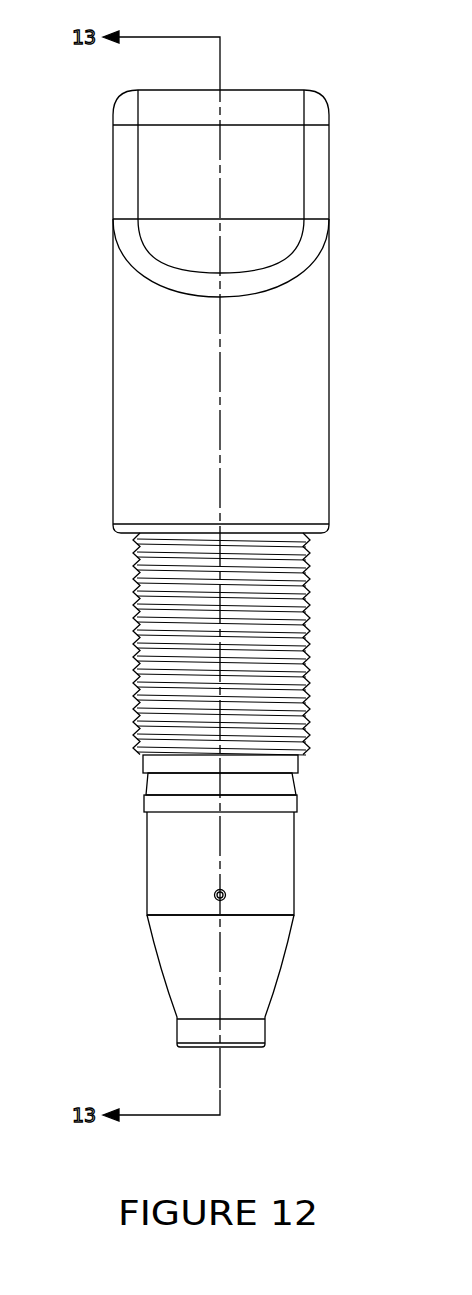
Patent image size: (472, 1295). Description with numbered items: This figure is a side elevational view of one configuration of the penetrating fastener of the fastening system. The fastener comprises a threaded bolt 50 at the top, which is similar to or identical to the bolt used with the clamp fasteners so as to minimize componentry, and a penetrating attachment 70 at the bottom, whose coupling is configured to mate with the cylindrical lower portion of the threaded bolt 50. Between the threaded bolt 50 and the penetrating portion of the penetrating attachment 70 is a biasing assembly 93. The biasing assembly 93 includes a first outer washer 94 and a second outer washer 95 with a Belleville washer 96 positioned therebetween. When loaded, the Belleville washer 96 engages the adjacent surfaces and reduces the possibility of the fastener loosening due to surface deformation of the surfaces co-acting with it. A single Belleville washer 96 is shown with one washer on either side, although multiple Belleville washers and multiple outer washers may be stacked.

The threaded bolt 50 is at (119, 605).
The penetrating attachment 70 is at (119, 985).
The biasing assembly 93 is at (197, 788).
The first outer washer 94 is at (298, 765).
The second outer washer 95 is at (297, 803).
The Belleville washer 96 is at (149, 782).